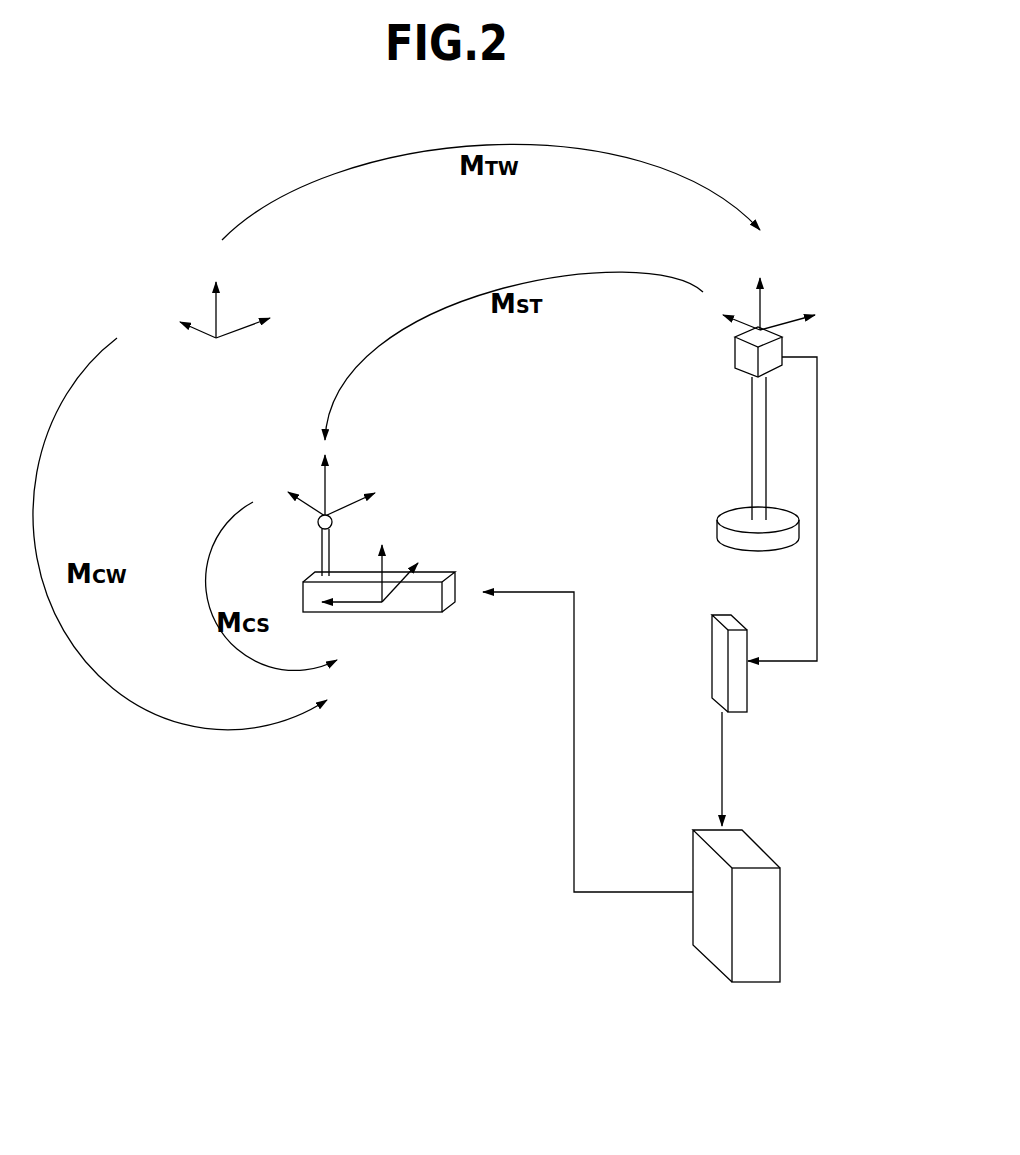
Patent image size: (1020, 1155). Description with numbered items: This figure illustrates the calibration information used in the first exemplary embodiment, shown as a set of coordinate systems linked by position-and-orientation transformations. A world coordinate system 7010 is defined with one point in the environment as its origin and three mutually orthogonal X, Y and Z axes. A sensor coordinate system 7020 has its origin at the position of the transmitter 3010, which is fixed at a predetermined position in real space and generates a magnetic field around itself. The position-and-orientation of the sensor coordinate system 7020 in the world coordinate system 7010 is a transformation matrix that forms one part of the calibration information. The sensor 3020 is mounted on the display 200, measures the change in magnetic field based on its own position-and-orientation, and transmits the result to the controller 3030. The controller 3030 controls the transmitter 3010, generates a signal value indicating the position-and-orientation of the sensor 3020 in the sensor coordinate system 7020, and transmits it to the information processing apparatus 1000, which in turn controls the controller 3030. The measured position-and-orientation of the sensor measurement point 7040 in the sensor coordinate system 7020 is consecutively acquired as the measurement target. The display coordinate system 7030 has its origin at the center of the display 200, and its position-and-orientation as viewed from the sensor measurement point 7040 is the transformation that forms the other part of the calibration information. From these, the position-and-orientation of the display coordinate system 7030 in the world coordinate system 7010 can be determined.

The world coordinate system 7010 is at (215, 315).
The sensor coordinate system 7020 is at (763, 312).
The sensor measurement point 7040 is at (322, 487).
The display coordinate system 7030 is at (392, 598).
The transmitter 3010 is at (733, 355).
The sensor 3020 is at (321, 560).
The display 200 is at (385, 612).
The controller 3030 is at (712, 661).
The information processing apparatus 1000 is at (781, 921).